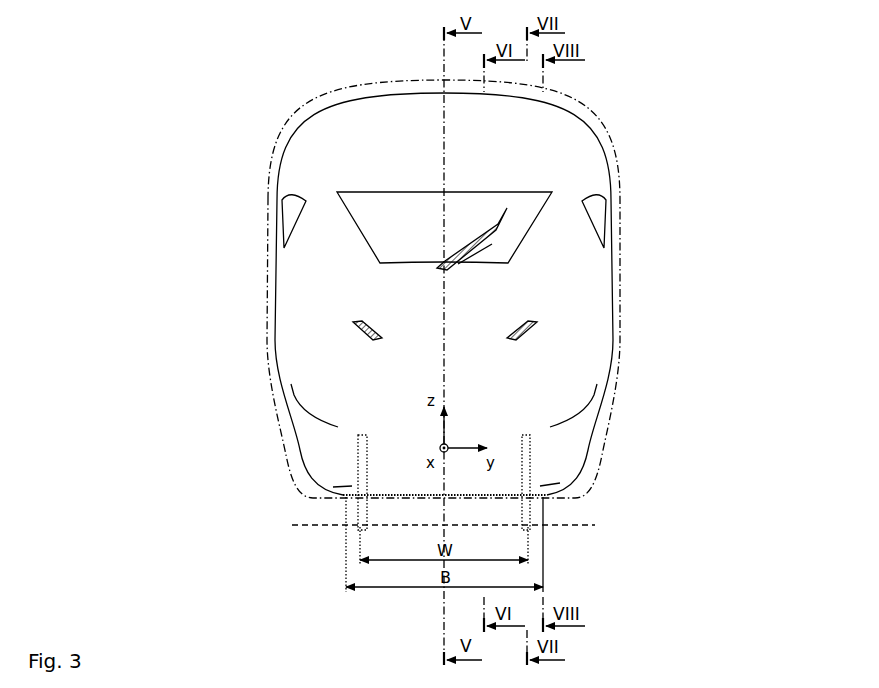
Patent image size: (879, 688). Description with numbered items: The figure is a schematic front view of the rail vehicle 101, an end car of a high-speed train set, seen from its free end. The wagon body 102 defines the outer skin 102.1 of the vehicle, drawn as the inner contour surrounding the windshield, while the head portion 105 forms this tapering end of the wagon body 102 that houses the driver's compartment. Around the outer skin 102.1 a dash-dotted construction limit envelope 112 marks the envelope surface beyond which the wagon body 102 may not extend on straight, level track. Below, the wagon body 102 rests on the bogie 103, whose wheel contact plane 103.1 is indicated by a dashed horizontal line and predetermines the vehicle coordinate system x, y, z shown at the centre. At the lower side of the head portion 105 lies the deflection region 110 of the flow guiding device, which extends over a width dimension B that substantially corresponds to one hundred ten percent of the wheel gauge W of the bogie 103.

The rail vehicle 101 is at (508, 329).
The wagon body 102 is at (428, 271).
The outer skin 102.1 is at (305, 126).
The bogie 103 is at (358, 525).
The wheel contact plane 103.1 is at (585, 528).
The head portion 105 is at (583, 127).
The deflection region 110 is at (503, 490).
The construction limit envelope 112 is at (623, 283).